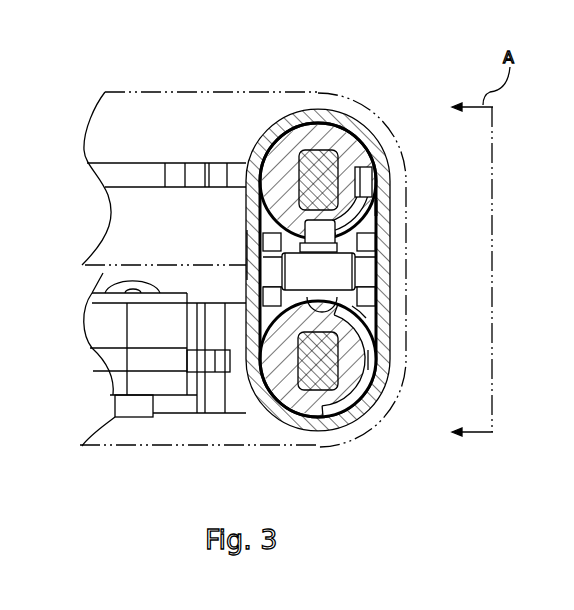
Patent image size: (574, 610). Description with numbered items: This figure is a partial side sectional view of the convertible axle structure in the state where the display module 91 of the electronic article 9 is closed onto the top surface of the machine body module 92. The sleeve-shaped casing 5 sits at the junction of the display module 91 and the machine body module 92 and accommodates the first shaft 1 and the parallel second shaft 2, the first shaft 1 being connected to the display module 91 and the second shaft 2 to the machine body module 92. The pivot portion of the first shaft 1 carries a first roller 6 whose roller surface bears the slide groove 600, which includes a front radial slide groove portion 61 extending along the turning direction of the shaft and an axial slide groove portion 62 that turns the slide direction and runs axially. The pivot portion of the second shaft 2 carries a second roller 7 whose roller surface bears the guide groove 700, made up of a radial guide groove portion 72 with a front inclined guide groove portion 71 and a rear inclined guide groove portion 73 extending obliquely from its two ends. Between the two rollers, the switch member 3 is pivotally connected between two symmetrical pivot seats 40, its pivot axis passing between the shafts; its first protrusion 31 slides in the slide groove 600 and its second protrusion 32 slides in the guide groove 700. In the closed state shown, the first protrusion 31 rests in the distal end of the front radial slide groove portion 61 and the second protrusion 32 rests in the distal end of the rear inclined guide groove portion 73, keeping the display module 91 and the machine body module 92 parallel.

The electronic article 9 is at (106, 74).
The display module 91 is at (163, 91).
The machine body module 92 is at (150, 447).
The casing 5 is at (390, 130).
The first roller 6 is at (305, 130).
The first shaft 1 is at (323, 157).
The axial slide groove portion 62 is at (372, 180).
The slide groove 600 is at (383, 209).
The front radial slide groove portion 61 is at (368, 208).
The pivot seat 40 is at (245, 275).
The first protrusion 31 is at (372, 241).
The switch member 3 is at (323, 275).
The second protrusion 32 is at (372, 297).
The rear inclined guide groove portion 73 is at (368, 318).
The radial guide groove portion 72 is at (368, 347).
The guide groove 700 is at (388, 372).
The second shaft 2 is at (375, 382).
The front inclined guide groove portion 71 is at (372, 408).
The second roller 7 is at (303, 403).